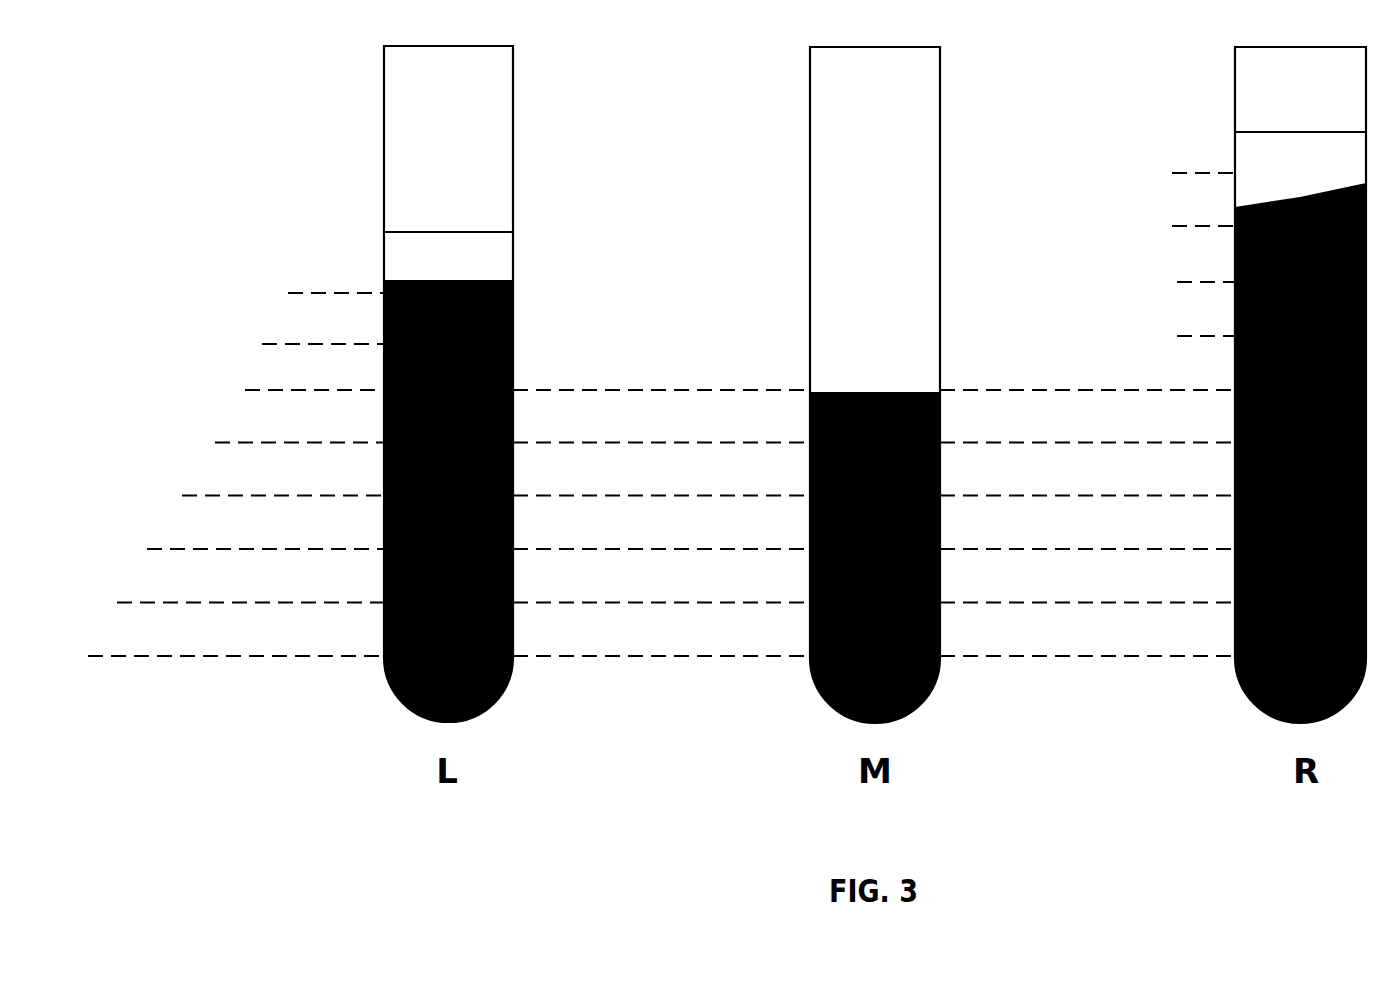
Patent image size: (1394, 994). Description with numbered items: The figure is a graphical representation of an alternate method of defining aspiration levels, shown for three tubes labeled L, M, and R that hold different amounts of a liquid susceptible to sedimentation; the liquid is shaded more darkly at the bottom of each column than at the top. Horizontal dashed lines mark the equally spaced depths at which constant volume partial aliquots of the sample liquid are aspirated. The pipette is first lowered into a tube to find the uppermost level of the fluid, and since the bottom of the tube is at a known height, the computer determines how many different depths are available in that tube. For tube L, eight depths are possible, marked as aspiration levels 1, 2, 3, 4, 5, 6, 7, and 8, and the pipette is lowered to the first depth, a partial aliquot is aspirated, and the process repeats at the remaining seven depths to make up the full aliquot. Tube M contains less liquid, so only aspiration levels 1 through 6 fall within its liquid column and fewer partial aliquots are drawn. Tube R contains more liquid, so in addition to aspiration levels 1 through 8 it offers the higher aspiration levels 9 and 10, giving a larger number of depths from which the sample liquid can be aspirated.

The aspiration level 1 is at (659, 639).
The aspiration level 2 is at (672, 585).
The aspiration level 3 is at (686, 532).
The aspiration level 4 is at (702, 478).
The aspiration level 5 is at (719, 426).
The aspiration level 6 is at (737, 372).
The aspiration level 7 is at (748, 322).
The aspiration level 8 is at (761, 269).
The aspiration level 9 is at (1203, 208).
The aspiration level 10 is at (1203, 156).